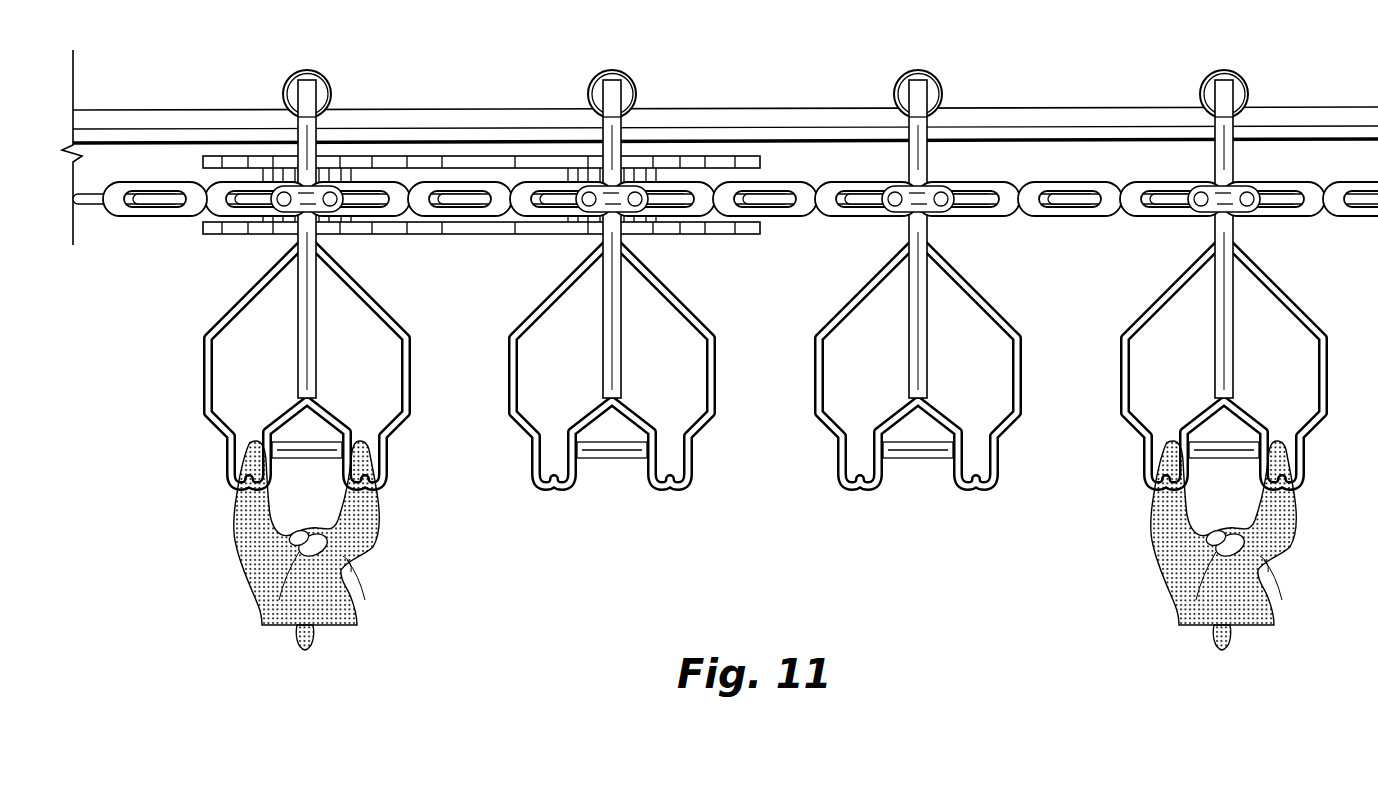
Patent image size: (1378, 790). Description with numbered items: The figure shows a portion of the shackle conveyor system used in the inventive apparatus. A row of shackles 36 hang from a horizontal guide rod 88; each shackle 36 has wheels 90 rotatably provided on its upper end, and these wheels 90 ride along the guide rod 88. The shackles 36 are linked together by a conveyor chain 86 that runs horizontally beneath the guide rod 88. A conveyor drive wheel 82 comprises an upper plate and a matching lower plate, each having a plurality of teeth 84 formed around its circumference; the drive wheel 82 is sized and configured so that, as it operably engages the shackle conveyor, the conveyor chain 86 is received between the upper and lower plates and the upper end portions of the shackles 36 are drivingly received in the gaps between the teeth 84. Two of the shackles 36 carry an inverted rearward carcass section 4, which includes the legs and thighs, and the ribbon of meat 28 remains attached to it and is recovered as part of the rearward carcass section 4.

The rearward carcass section 4 is at (247, 573).
The ribbon of meat 28 is at (300, 650).
The shackle 36 is at (207, 370).
The conveyor drive wheel 82 is at (483, 234).
The teeth 84 is at (263, 158).
The conveyor chain 86 is at (122, 213).
The horizontal guide rod 88 is at (782, 112).
The wheels 90 is at (306, 71).